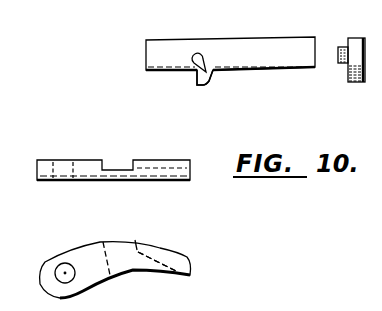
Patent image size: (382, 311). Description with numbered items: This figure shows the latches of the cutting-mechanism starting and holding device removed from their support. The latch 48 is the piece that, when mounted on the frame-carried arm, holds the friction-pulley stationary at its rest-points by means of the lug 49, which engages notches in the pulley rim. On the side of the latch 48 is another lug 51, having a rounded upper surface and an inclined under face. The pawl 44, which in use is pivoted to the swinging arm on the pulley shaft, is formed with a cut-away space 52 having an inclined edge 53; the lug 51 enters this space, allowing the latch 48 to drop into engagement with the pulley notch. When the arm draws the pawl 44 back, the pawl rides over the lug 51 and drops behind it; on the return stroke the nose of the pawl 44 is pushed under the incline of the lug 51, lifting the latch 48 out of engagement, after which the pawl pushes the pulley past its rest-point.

The pawl 44 is at (53, 257).
The latch 48 is at (230, 61).
The lug 49 is at (200, 86).
The lug 51 is at (201, 56).
The cut-away space 52 is at (114, 168).
The inclined edge 53 is at (152, 260).